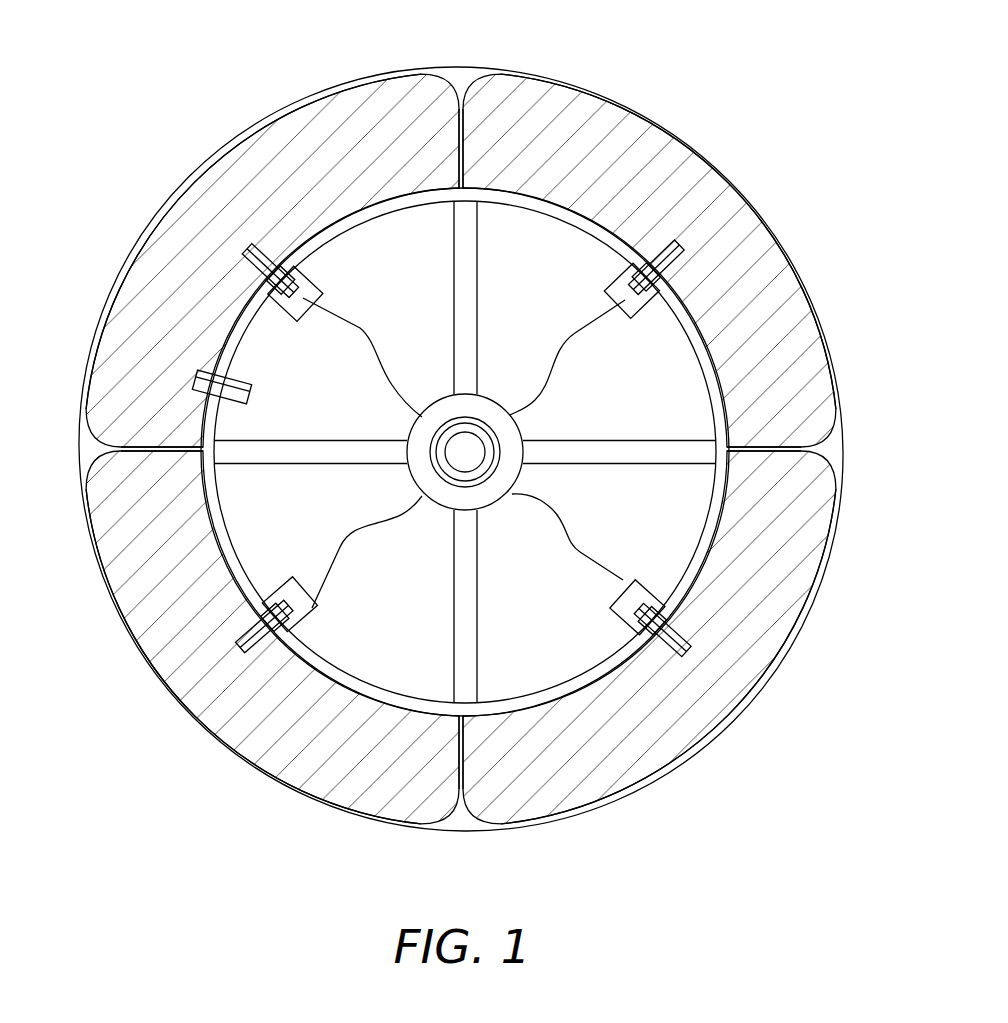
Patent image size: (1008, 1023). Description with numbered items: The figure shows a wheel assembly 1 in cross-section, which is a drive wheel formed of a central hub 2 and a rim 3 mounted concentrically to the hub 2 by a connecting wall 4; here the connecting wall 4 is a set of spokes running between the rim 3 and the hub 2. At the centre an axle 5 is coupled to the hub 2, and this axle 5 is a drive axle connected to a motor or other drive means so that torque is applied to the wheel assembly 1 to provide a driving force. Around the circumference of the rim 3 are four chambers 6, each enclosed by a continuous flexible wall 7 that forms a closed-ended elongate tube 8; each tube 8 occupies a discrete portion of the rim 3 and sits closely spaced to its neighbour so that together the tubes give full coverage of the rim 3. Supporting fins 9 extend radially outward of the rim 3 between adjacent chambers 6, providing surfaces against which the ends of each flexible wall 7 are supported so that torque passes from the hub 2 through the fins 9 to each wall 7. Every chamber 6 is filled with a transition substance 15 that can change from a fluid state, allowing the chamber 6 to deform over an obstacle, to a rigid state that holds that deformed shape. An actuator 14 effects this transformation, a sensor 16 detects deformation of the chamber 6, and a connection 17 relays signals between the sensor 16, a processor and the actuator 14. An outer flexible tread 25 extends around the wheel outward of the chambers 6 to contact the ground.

The wheel assembly 1 is at (721, 77).
The hub 2 is at (422, 477).
The rim 3 is at (700, 350).
The connecting wall 4 is at (472, 266).
The axle 5 is at (472, 460).
The chamber 6 is at (343, 100).
The flexible wall 7 is at (616, 100).
The elongate tube 8 is at (586, 82).
The supporting fin 9 is at (466, 88).
The actuator 14 is at (642, 308).
The transition substance 15 is at (737, 193).
The sensor 16 is at (300, 266).
The connection 17 is at (367, 333).
The outer flexible tread 25 is at (452, 832).